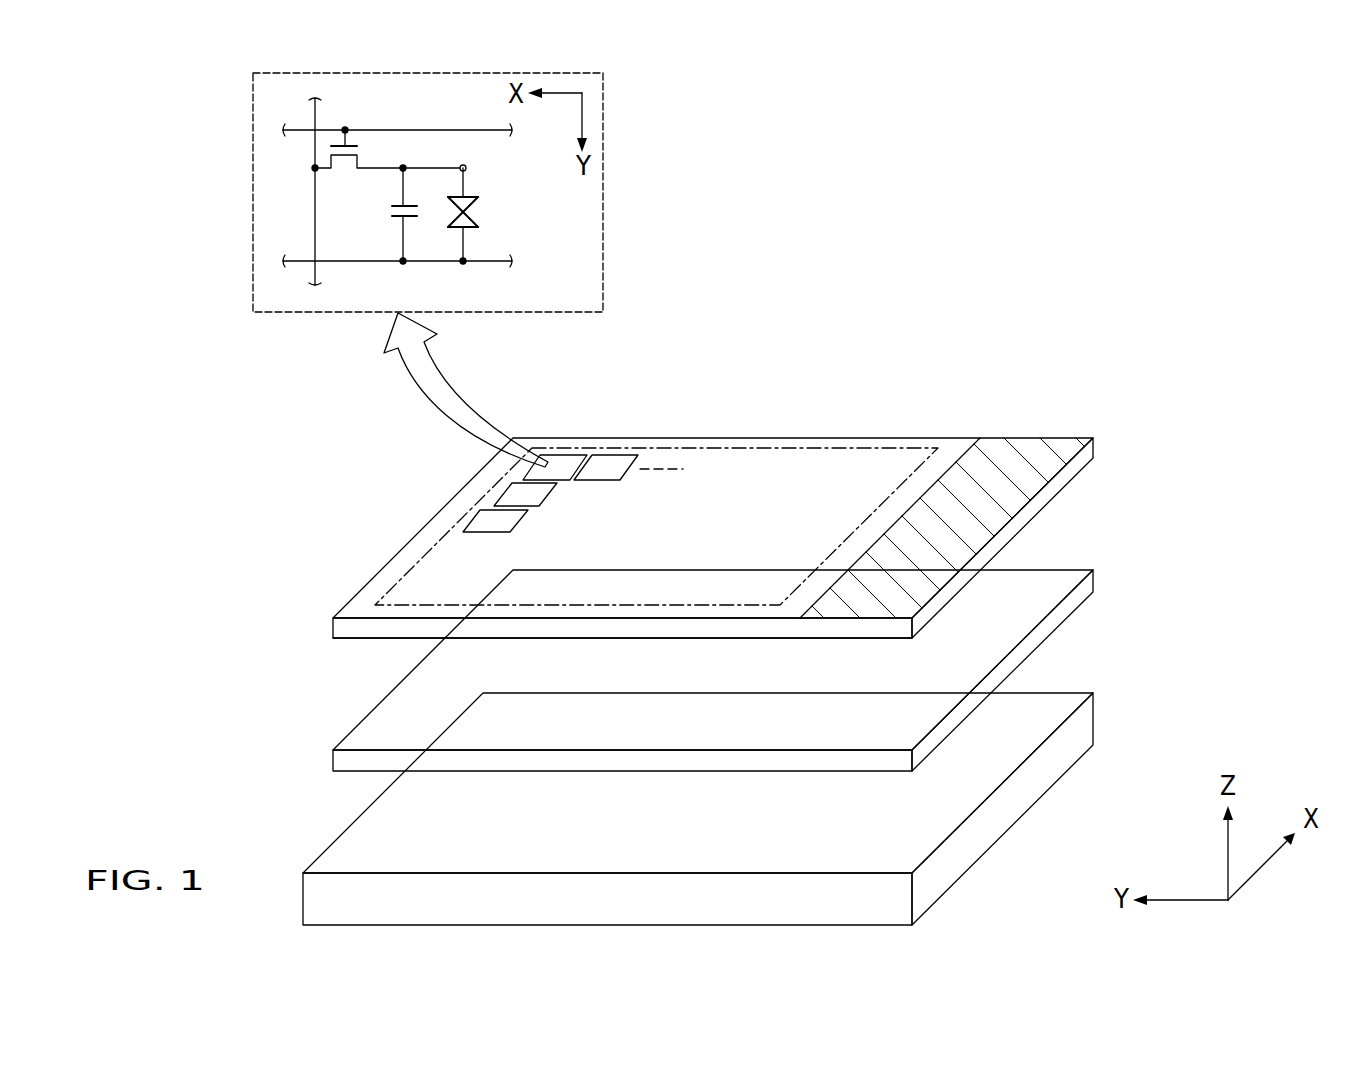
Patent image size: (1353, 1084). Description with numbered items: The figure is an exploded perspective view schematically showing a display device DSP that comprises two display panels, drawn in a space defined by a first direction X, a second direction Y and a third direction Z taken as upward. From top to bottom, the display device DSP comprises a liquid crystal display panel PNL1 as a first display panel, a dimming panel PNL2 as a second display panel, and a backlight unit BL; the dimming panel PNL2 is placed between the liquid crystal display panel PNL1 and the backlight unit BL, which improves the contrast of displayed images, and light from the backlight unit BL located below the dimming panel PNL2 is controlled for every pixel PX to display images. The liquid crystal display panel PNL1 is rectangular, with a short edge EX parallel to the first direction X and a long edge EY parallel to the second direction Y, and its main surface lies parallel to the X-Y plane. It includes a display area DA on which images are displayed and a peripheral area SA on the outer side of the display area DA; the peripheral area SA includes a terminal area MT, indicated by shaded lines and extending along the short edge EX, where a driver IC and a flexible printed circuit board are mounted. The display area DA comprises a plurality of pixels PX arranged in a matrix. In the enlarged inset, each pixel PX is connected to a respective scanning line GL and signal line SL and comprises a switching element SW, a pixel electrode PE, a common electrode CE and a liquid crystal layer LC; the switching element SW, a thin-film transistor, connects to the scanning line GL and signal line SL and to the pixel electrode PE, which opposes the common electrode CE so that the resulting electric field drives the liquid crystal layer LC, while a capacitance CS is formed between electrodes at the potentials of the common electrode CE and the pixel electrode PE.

The pixel PX is at (606, 120).
The scanning line GL is at (300, 128).
The signal line SL is at (313, 207).
The switching element SW is at (378, 156).
The pixel electrode PE is at (468, 168).
The common electrode CE is at (487, 264).
The capacitance CS is at (383, 216).
The liquid crystal layer LC is at (490, 208).
The display device DSP is at (383, 476).
The liquid crystal display panel PNL1 is at (692, 545).
The dimming panel PNL2 is at (333, 760).
The backlight unit BL is at (303, 898).
The display area DA is at (693, 448).
The peripheral area SA is at (858, 440).
The terminal area MT is at (1005, 440).
The short edge EX is at (1084, 481).
The long edge EY is at (668, 648).